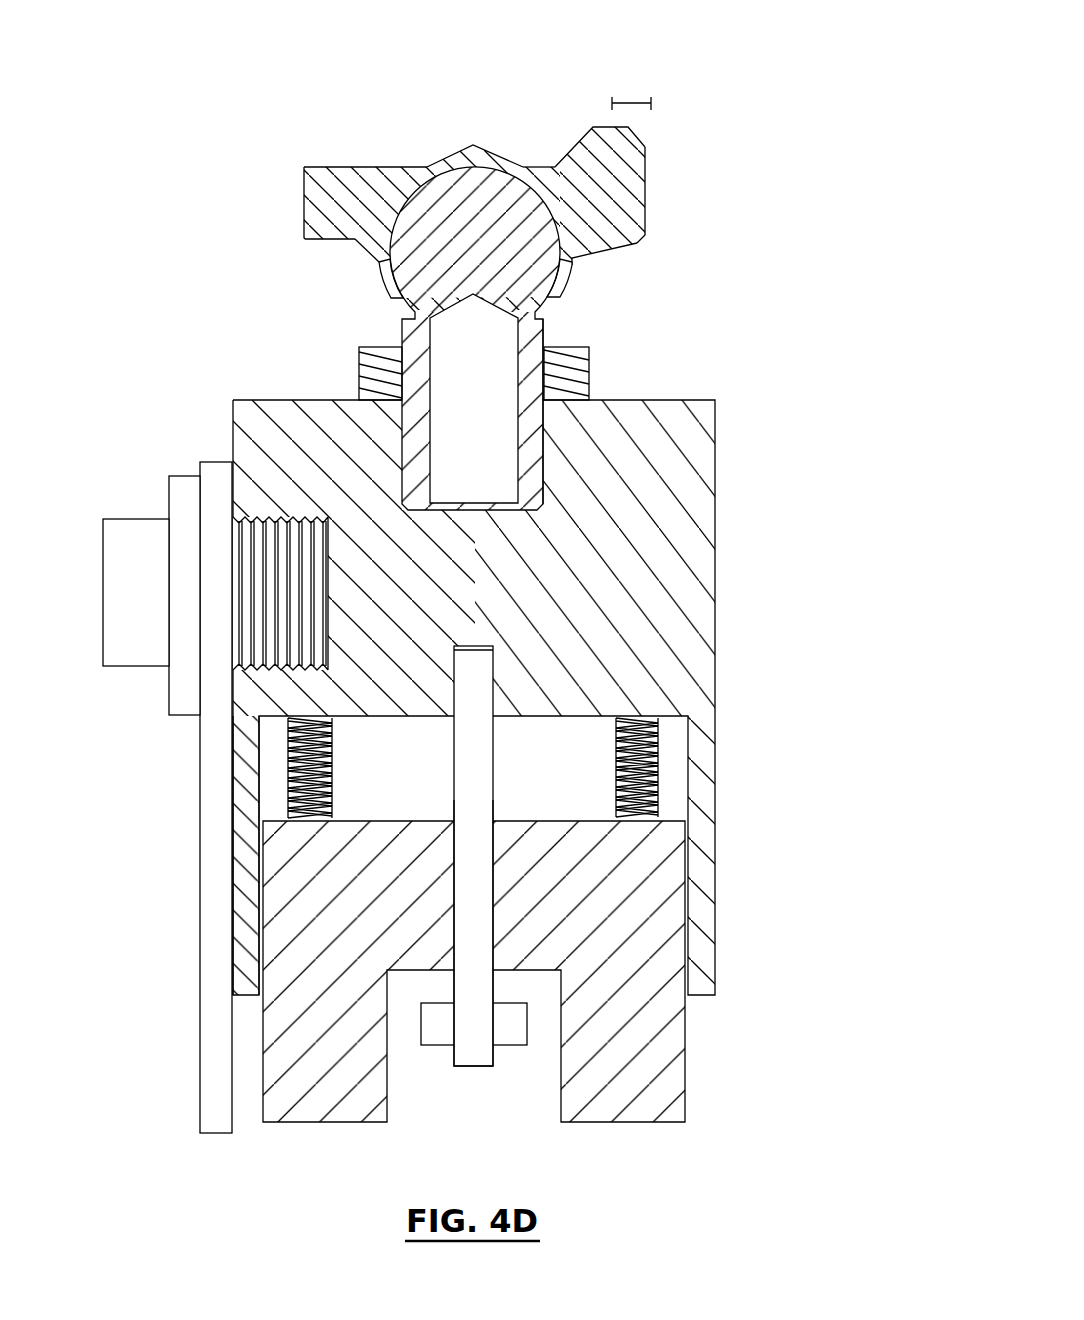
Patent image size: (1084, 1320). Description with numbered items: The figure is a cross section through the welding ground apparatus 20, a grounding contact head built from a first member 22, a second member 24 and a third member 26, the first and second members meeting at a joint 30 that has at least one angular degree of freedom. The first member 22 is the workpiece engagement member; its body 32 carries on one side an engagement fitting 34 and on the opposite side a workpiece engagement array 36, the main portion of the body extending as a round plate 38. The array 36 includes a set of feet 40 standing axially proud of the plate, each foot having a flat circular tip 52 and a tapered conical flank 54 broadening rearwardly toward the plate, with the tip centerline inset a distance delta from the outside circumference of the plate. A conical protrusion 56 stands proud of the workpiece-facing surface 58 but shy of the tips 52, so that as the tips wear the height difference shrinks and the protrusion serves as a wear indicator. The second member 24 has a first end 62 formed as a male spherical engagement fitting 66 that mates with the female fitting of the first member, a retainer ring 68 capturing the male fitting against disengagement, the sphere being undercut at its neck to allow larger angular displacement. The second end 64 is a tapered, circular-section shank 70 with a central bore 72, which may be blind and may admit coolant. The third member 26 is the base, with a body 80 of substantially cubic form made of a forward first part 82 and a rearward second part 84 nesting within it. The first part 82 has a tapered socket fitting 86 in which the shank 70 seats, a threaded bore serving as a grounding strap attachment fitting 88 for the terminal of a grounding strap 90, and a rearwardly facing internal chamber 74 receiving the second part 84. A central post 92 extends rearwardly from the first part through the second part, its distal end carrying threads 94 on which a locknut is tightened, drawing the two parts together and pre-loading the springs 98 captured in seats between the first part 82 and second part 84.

The welding ground apparatus 20 is at (128, 173).
The first member 22 is at (801, 160).
The second member 24 is at (800, 331).
The third member 26 is at (824, 813).
The joint 30 is at (608, 287).
The body 32 is at (603, 240).
The engagement fitting 34 is at (366, 238).
The engagement array 36 is at (372, 149).
The plate 38 is at (602, 204).
The feet 40 is at (647, 89).
The tip 52 is at (600, 127).
The flank 54 is at (573, 150).
The protrusion 56 is at (455, 157).
The workpiece-facing surface 58 is at (328, 167).
The first end 62 is at (350, 306).
The second end 64 is at (369, 385).
The engagement fitting 66 is at (412, 213).
The retainer ring 68 is at (388, 273).
The shank 70 is at (533, 378).
The central bore 72 is at (441, 426).
The internal chamber 74 is at (260, 796).
The body 80 is at (765, 684).
The first part 82 is at (633, 505).
The second part 84 is at (643, 1024).
The fitting 86 is at (541, 447).
The grounding strap attachment fitting 88 is at (257, 628).
The grounding strap 90 is at (200, 768).
The central post 92 is at (468, 792).
The threads 94 is at (510, 658).
The springs 98 is at (650, 765).